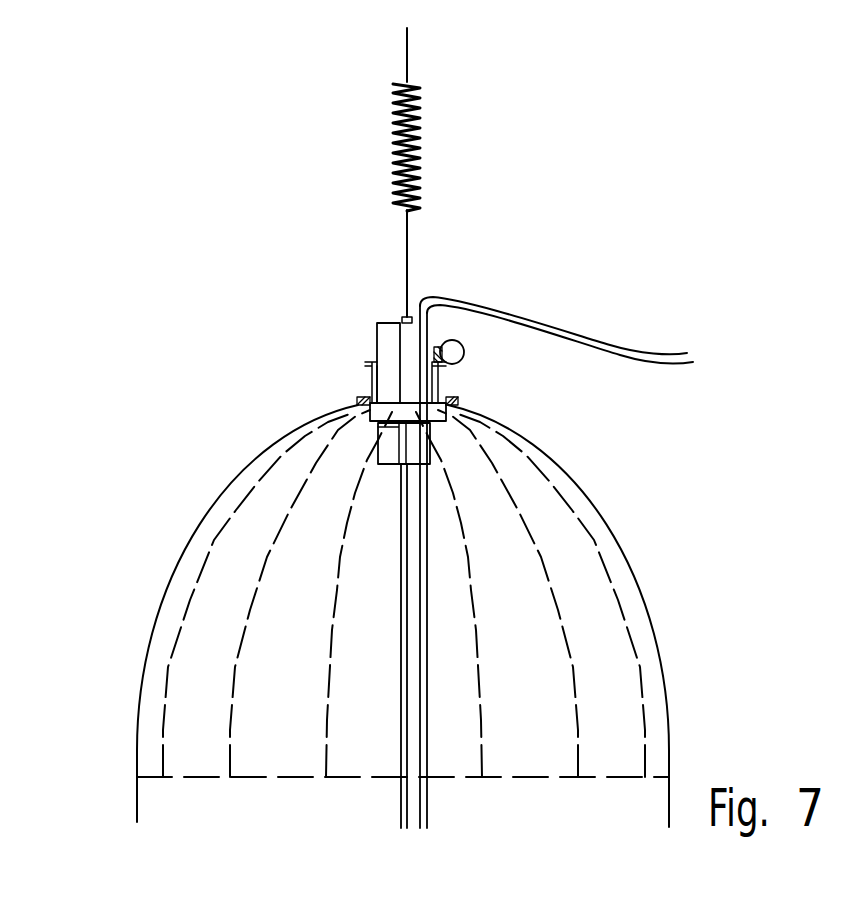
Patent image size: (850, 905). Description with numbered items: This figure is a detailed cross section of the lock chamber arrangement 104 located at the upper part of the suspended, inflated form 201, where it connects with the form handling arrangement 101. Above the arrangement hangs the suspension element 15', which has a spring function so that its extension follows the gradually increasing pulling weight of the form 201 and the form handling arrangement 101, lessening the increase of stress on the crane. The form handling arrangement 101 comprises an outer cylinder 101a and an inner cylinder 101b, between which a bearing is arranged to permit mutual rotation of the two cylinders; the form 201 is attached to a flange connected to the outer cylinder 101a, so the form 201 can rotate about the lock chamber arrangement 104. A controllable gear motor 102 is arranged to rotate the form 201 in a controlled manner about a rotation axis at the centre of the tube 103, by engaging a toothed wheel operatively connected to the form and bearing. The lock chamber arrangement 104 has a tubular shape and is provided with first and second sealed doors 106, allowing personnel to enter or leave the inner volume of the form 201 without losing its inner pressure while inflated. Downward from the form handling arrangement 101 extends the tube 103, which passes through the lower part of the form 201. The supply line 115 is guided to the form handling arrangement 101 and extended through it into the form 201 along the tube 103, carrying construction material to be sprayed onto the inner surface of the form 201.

The suspension element 15' is at (484, 175).
The lock chamber arrangement 104 is at (408, 353).
The gear motor 102 is at (463, 347).
The form handling arrangement 101 is at (326, 369).
The inner cylinder 101b is at (377, 345).
The outer cylinder 101a is at (367, 378).
The sealed door 106 is at (392, 362).
The supply line 115 is at (430, 683).
The tube 103 is at (403, 713).
The inflated form 201 is at (602, 518).